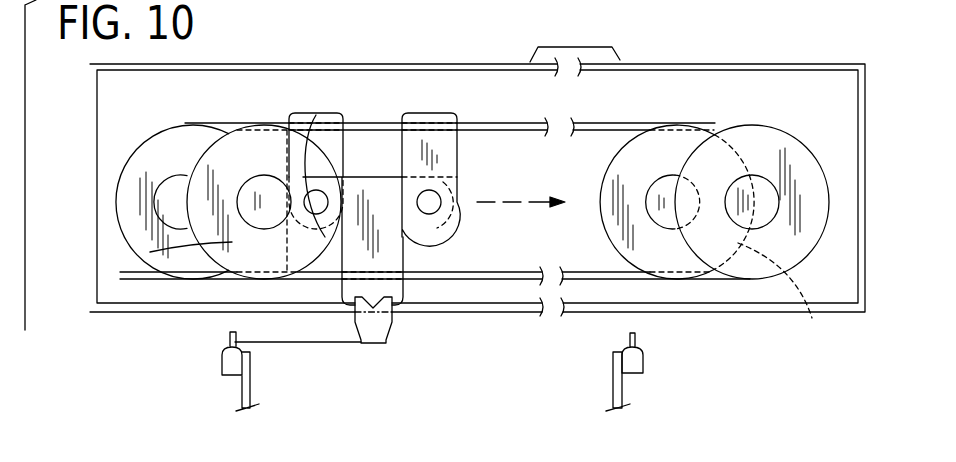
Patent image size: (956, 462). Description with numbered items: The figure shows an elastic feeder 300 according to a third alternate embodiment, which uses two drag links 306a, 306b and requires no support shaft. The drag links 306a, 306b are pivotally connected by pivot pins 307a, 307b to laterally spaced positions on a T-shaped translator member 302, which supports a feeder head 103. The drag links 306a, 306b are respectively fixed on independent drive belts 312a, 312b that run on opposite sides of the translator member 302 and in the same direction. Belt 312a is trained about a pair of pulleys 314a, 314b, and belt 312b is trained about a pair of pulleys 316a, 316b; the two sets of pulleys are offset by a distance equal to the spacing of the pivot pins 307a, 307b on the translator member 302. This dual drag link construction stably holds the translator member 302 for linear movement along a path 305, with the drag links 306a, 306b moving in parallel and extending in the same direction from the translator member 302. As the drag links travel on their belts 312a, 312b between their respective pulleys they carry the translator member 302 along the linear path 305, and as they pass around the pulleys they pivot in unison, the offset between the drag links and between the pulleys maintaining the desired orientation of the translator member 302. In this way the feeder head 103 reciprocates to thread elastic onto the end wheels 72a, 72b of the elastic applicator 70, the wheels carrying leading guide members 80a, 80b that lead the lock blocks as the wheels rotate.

The elastic feeder 300 is at (790, 60).
The translator member 302 is at (408, 258).
The linear path 305 is at (510, 202).
The drag link 306a is at (316, 115).
The drag link 306b is at (433, 113).
The pivot pin 307a is at (323, 202).
The pivot pin 307b is at (434, 196).
The drive belt 312a is at (228, 123).
The drive belt 312b is at (717, 125).
The pulley 314a is at (141, 145).
The pulley 314b is at (811, 308).
The pulley 316a is at (150, 252).
The pulley 316b is at (808, 148).
The feeder head 103 is at (392, 328).
The leading guide member 80a is at (228, 340).
The leading guide member 80b is at (628, 338).
The end wheel 72a is at (254, 388).
The end wheel 72b is at (626, 389).
The elastic applicator 70 is at (657, 402).